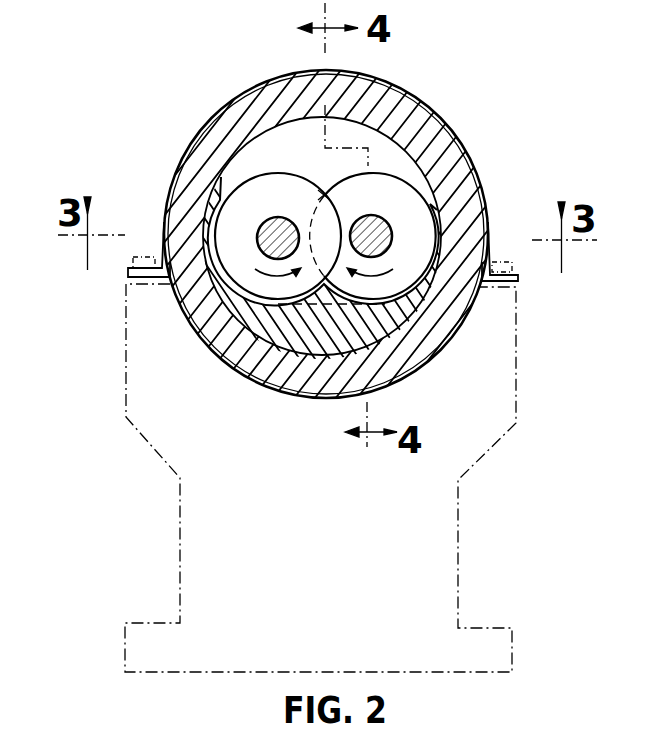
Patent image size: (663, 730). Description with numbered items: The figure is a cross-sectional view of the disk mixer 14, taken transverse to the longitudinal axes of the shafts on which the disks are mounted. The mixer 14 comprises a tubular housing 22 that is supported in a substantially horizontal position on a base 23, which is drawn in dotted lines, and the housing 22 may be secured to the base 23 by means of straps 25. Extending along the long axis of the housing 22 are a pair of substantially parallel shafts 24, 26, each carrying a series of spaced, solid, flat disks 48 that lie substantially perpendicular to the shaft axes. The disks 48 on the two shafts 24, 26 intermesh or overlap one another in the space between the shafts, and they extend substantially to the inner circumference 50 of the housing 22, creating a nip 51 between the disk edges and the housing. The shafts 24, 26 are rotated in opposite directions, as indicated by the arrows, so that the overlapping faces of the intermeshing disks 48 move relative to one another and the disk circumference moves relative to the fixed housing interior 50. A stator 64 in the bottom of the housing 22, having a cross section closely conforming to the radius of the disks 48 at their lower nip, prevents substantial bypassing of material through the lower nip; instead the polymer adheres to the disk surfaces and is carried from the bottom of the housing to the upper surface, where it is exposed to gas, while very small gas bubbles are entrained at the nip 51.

The disk mixer 14 is at (499, 115).
The tubular housing 22 is at (220, 138).
The base 23 is at (126, 417).
The shaft 24 is at (388, 200).
The strap 25 is at (160, 235).
The shaft 26 is at (279, 226).
The disk 48 is at (325, 194).
The inner circumference of the housing 50 is at (252, 141).
The nip 51 is at (220, 177).
The stator 64 is at (316, 332).